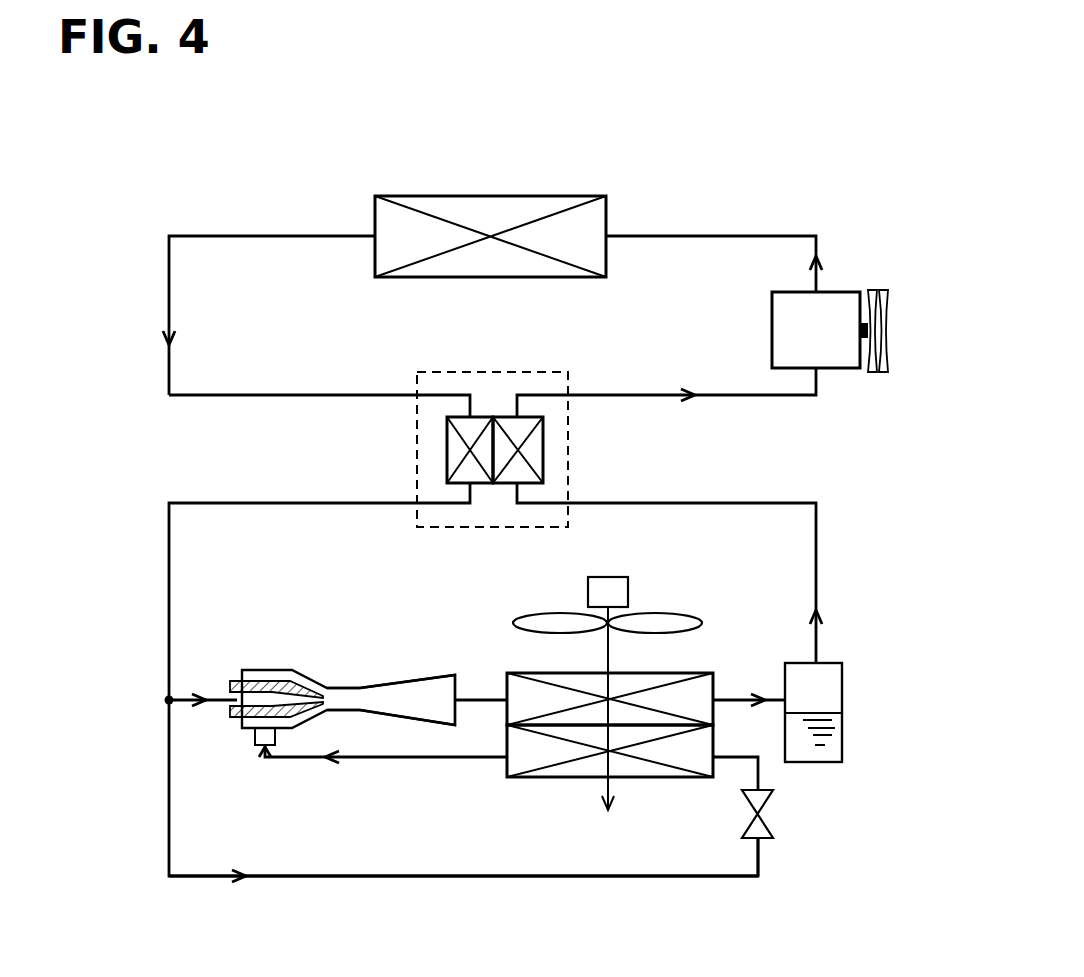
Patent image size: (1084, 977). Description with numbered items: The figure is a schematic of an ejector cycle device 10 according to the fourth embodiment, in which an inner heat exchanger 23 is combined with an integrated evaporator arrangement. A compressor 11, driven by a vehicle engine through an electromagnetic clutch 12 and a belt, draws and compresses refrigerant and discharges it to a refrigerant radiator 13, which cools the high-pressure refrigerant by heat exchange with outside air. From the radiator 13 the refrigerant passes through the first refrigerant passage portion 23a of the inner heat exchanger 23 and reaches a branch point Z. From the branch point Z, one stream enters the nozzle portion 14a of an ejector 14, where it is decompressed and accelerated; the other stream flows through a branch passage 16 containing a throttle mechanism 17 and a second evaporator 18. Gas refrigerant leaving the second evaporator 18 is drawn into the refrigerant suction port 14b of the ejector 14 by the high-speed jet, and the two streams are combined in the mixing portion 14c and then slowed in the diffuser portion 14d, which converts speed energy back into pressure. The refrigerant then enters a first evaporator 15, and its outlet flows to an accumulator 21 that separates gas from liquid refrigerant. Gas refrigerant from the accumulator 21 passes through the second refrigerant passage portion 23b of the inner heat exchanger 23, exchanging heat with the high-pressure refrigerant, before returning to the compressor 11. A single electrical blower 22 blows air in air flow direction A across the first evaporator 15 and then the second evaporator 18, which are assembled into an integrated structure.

The ejector cycle device 10 is at (690, 205).
The compressor 11 is at (843, 292).
The electromagnetic clutch 12 is at (888, 292).
The refrigerant radiator 13 is at (560, 196).
The ejector 14 is at (325, 696).
The nozzle portion 14a is at (283, 681).
The refrigerant suction port 14b is at (252, 745).
The mixing portion 14c is at (358, 692).
The diffuser portion 14d is at (445, 688).
The first evaporator 15 is at (714, 680).
The branch passage 16 is at (300, 877).
The throttle mechanism 17 is at (773, 822).
The second evaporator 18 is at (530, 777).
The accumulator 21 is at (842, 690).
The electrical blower 22 is at (702, 623).
The inner heat exchanger 23 is at (480, 449).
The first refrigerant passage portion 23a is at (447, 465).
The second refrigerant passage portion 23b is at (543, 465).
The branch point Z is at (165, 700).
The air flow direction A is at (612, 780).